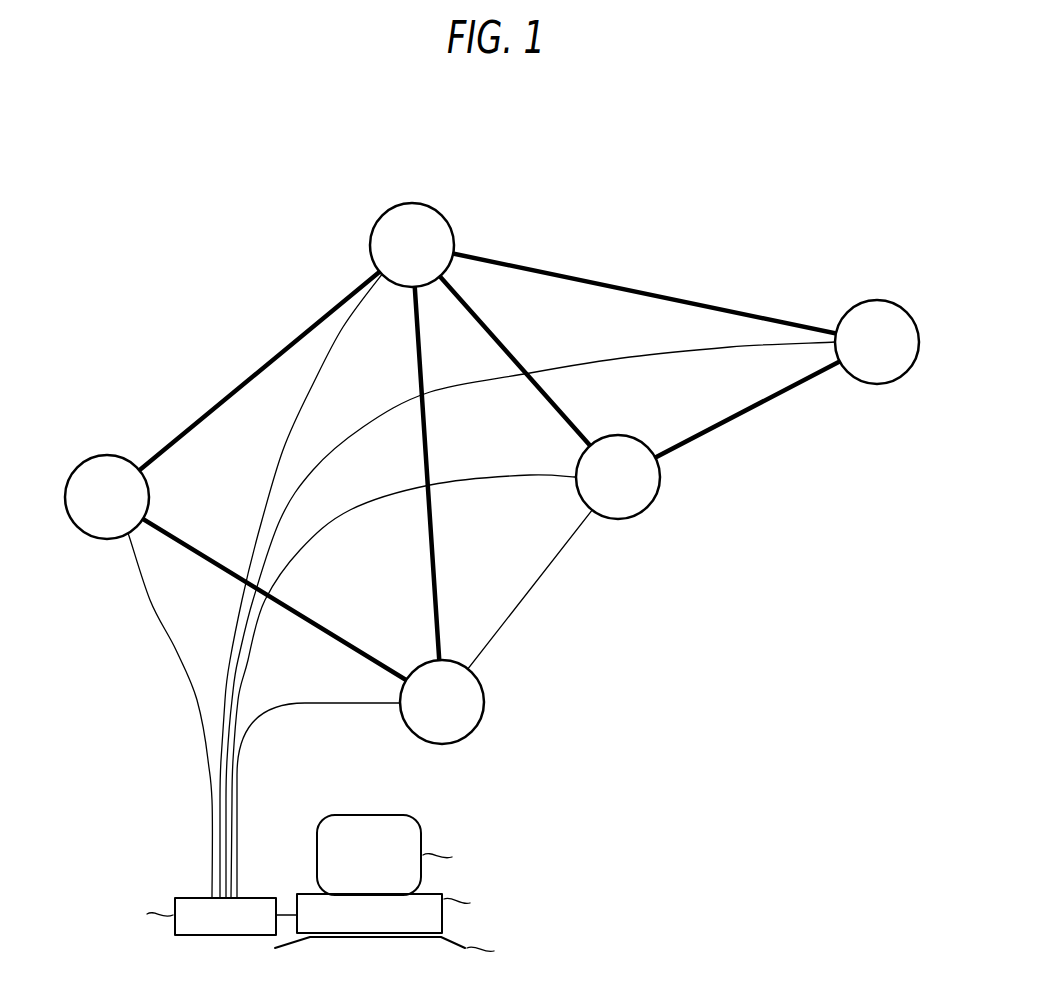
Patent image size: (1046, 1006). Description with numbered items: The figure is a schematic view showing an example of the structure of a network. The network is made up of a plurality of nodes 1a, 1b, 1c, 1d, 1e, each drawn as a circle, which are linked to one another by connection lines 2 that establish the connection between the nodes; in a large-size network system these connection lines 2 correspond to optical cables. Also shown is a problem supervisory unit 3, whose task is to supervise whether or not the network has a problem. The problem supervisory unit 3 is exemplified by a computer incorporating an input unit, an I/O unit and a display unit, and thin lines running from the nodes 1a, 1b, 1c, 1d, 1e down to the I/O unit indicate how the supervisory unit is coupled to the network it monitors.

The node 1a is at (413, 203).
The node 1b is at (106, 455).
The node 1c is at (485, 702).
The node 1d is at (618, 435).
The node 1e is at (877, 300).
The connection line 2 is at (642, 289).
The problem supervisory unit 3 is at (450, 615).